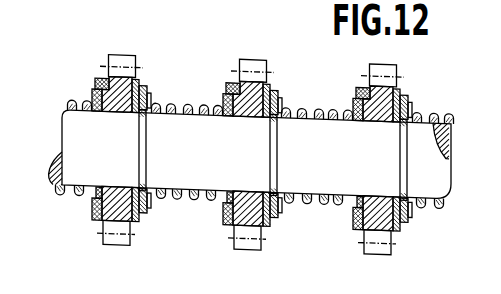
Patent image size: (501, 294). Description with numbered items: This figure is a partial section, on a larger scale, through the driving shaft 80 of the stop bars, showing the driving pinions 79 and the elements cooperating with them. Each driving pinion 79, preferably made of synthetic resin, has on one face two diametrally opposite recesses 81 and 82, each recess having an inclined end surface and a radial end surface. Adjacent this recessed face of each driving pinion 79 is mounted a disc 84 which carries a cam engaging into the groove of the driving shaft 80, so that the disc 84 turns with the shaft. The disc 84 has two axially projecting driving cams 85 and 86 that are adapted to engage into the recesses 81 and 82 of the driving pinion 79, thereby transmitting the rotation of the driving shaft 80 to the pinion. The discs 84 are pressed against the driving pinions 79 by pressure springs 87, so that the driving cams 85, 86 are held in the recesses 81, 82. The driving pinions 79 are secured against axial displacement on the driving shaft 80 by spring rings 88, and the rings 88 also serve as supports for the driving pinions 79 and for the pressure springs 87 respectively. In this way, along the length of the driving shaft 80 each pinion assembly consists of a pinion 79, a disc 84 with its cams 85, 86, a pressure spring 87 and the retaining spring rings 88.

The driving pinion 79 is at (127, 60).
The driving shaft 80 is at (73, 145).
The recess 81 is at (105, 76).
The recess 82 is at (100, 221).
The disc 84 is at (96, 100).
The driving cam 85 is at (105, 77).
The driving cam 86 is at (92, 199).
The pressure spring 87 is at (72, 100).
The spring ring 88 is at (138, 215).